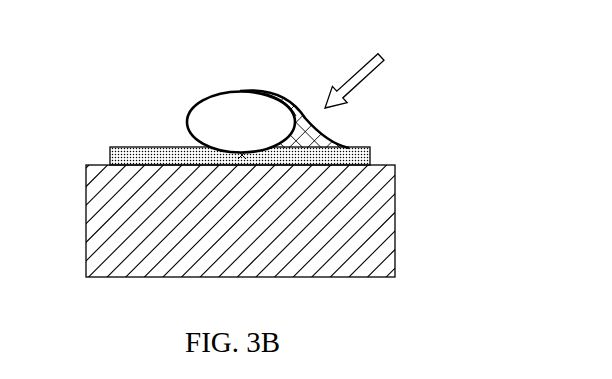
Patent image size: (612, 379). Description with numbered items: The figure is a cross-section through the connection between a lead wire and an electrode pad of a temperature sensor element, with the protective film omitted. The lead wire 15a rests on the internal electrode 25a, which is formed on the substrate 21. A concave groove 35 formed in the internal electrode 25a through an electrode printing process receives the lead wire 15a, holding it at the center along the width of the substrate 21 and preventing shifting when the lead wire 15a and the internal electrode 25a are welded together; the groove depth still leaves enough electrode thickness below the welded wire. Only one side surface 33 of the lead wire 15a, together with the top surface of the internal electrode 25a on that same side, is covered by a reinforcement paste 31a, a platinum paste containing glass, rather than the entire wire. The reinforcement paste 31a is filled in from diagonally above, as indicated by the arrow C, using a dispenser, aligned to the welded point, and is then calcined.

The lead wire 15a is at (208, 118).
The substrate 21 is at (383, 225).
The internal electrode 25a is at (369, 155).
The reinforcement paste 31a is at (295, 120).
The one side surface 33 is at (298, 120).
The concave groove 35 is at (241, 156).
The arrow C is at (364, 75).